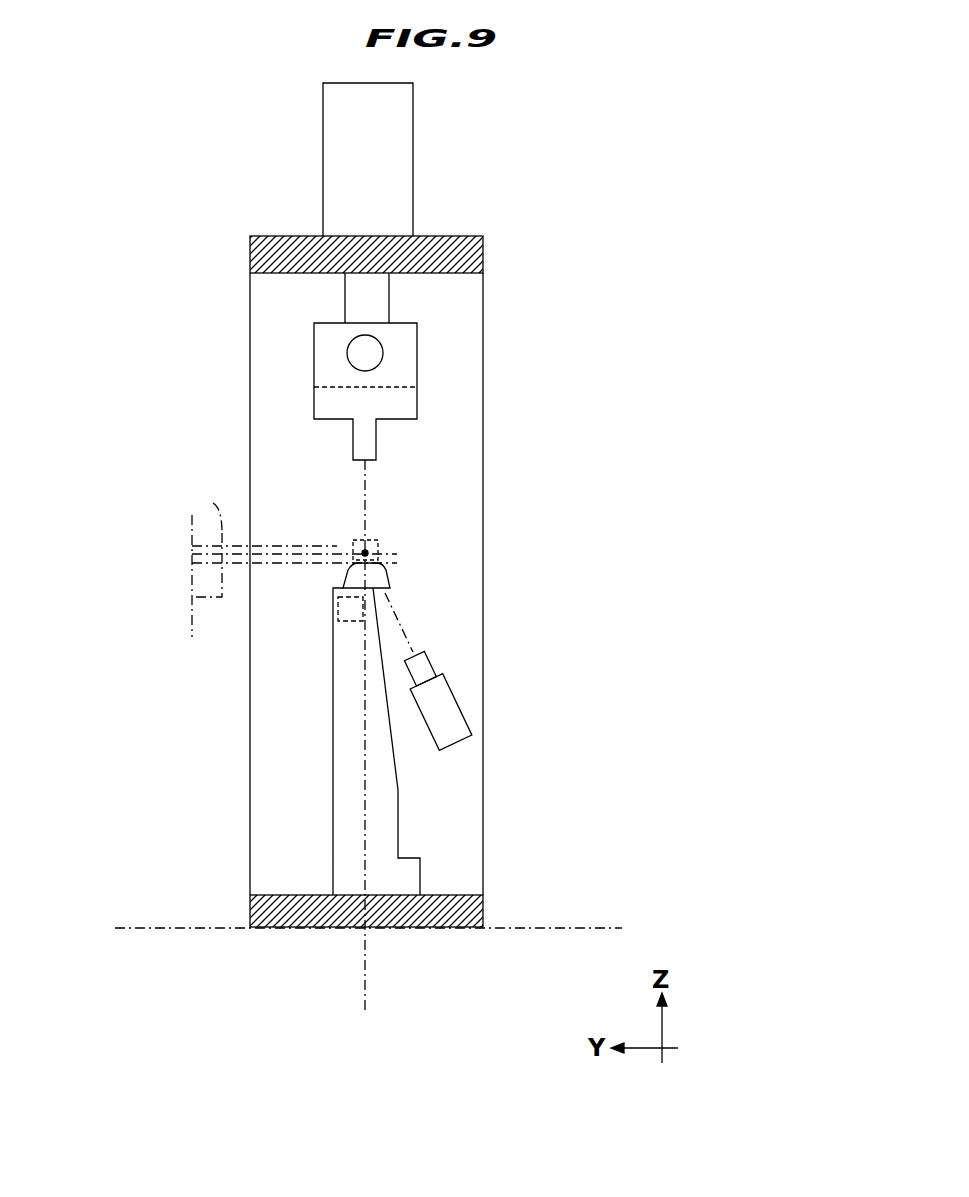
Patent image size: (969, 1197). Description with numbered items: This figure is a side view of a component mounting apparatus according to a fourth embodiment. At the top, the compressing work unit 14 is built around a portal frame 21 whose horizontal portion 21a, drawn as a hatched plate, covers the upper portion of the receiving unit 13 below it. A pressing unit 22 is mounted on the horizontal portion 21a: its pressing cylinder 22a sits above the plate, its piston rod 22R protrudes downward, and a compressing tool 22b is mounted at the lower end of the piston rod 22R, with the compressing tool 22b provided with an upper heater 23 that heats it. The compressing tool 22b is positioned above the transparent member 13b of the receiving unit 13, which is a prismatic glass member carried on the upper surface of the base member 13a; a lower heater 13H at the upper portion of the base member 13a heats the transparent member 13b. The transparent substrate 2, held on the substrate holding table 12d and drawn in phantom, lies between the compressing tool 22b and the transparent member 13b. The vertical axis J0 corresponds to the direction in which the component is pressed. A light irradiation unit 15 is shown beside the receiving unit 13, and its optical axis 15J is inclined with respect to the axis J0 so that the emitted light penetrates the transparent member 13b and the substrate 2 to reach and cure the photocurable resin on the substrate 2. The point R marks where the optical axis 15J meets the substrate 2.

The substrate 2 is at (213, 503).
The substrate holding table 12d is at (192, 593).
The receiving unit 13 is at (466, 719).
The base member 13a is at (380, 798).
The transparent member 13b is at (390, 568).
The lower heater 13H is at (338, 612).
The compressing work unit 14 is at (508, 255).
The light irradiation unit 15 is at (450, 713).
The optical axis 15J is at (398, 620).
The portal frame 21 is at (241, 738).
The horizontal portion 21a is at (252, 248).
The pressing unit 22 is at (365, 271).
The pressing cylinder 22a is at (403, 138).
The compressing tool 22b is at (407, 403).
The piston rod 22R is at (353, 297).
The upper heater 23 is at (375, 352).
The reference point R is at (368, 550).
The axis J0 is at (367, 982).